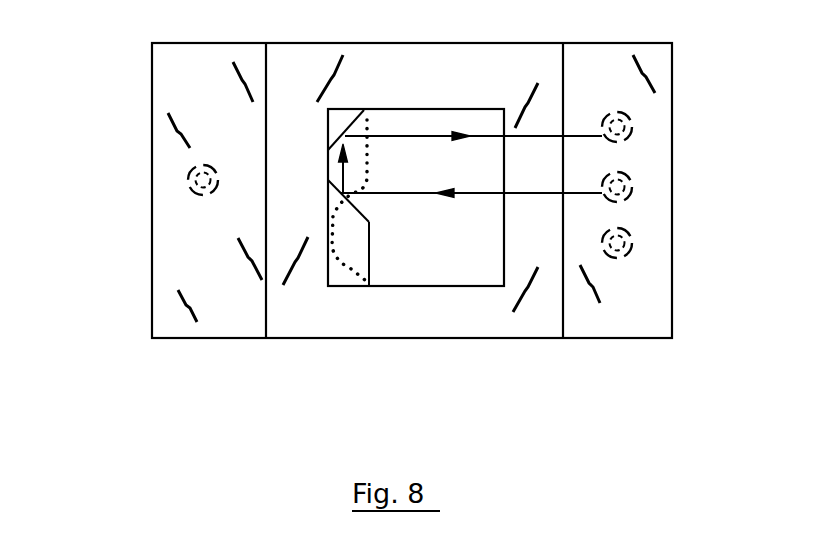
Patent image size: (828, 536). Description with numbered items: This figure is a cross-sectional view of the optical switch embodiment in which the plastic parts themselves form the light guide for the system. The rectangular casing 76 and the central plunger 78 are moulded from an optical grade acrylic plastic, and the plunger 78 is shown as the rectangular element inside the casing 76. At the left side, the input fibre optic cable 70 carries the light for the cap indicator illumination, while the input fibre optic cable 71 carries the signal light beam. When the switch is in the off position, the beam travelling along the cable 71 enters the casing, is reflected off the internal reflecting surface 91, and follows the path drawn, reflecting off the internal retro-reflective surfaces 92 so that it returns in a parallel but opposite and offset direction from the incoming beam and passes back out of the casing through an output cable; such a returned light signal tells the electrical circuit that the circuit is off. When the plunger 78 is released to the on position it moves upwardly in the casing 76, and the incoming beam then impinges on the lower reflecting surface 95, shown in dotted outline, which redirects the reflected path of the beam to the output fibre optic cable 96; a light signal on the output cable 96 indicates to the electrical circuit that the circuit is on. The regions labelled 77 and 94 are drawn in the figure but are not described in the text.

The input fibre optic cable 70 is at (188, 180).
The input fibre optic cable 71 is at (632, 182).
The rectangular casing 76 is at (319, 317).
The left chamber 77 is at (195, 270).
The plunger 78 is at (465, 267).
The internal reflecting surface 91 is at (637, 290).
The internal retro-reflective surfaces 92 is at (357, 122).
The light source 94 is at (632, 122).
The lower reflecting surface 95 is at (340, 258).
The output fibre optic cable 96 is at (632, 240).